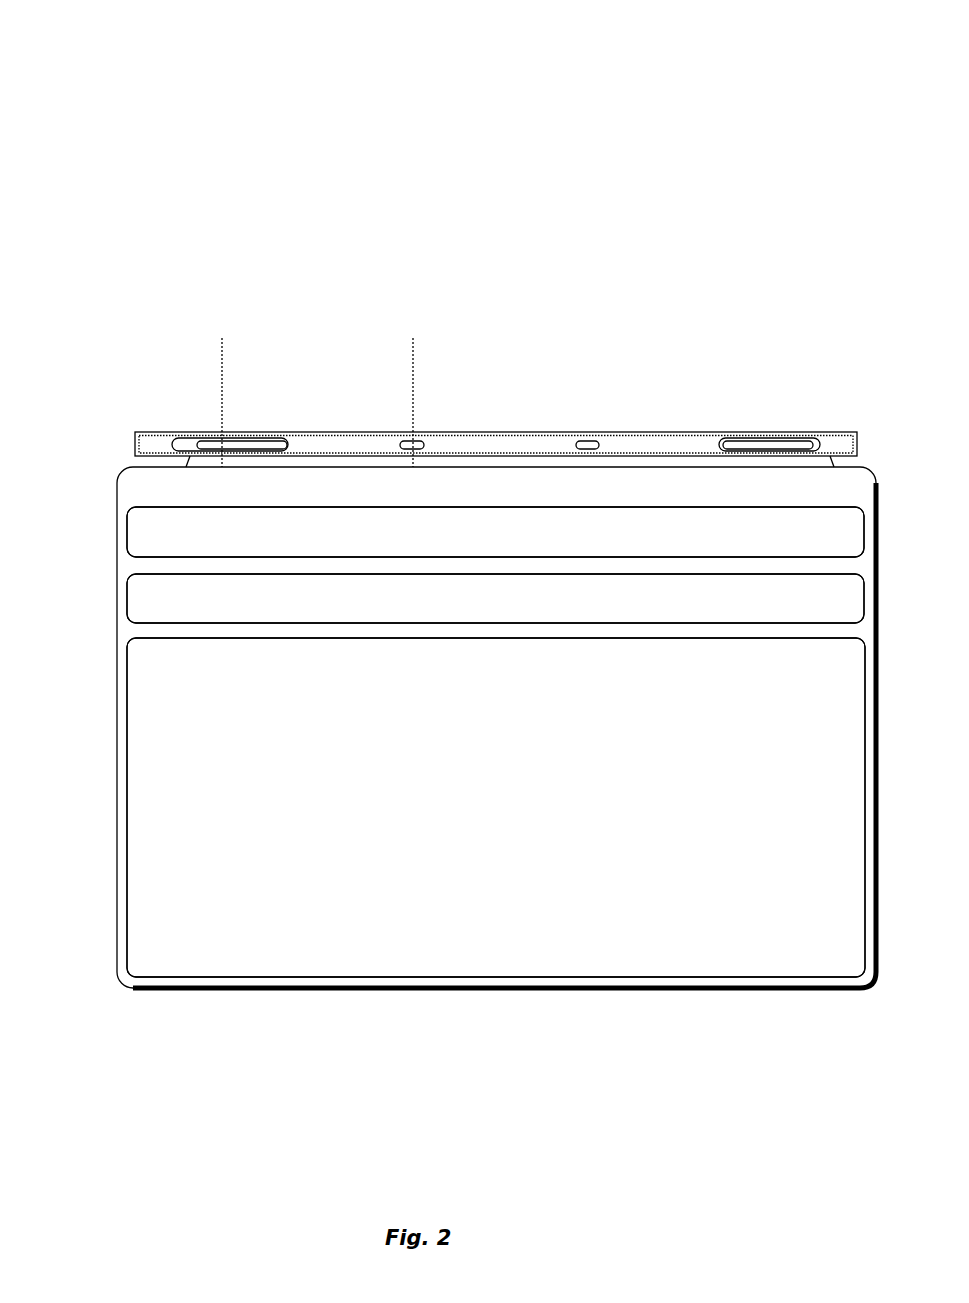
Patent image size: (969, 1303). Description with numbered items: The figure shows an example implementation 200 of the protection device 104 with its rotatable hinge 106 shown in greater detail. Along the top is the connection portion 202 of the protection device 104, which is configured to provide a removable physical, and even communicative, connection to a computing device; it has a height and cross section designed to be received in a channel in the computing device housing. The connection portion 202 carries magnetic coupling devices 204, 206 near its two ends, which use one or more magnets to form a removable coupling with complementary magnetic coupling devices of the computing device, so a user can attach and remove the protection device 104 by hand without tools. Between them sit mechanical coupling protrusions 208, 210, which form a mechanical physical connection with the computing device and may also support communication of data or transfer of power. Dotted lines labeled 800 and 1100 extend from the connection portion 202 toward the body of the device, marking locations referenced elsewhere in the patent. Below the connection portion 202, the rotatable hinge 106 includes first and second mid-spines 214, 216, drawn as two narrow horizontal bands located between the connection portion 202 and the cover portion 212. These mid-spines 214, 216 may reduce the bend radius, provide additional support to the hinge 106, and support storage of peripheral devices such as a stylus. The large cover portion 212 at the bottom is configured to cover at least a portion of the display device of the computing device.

The example implementation 200 is at (140, 70).
The connection portion 202 is at (157, 432).
The magnetic coupling device 204 is at (230, 446).
The magnetic coupling device 206 is at (767, 443).
The mechanical coupling protrusion 208 is at (413, 446).
The mechanical coupling protrusion 210 is at (590, 443).
The sensor location 800 is at (222, 338).
The sensor location 1100 is at (413, 338).
The protection device 104 is at (118, 715).
The rotatable hinge 106 is at (104, 548).
The cover portion 212 is at (496, 807).
The first mid-spine 214 is at (495, 532).
The second mid-spine 216 is at (495, 598).